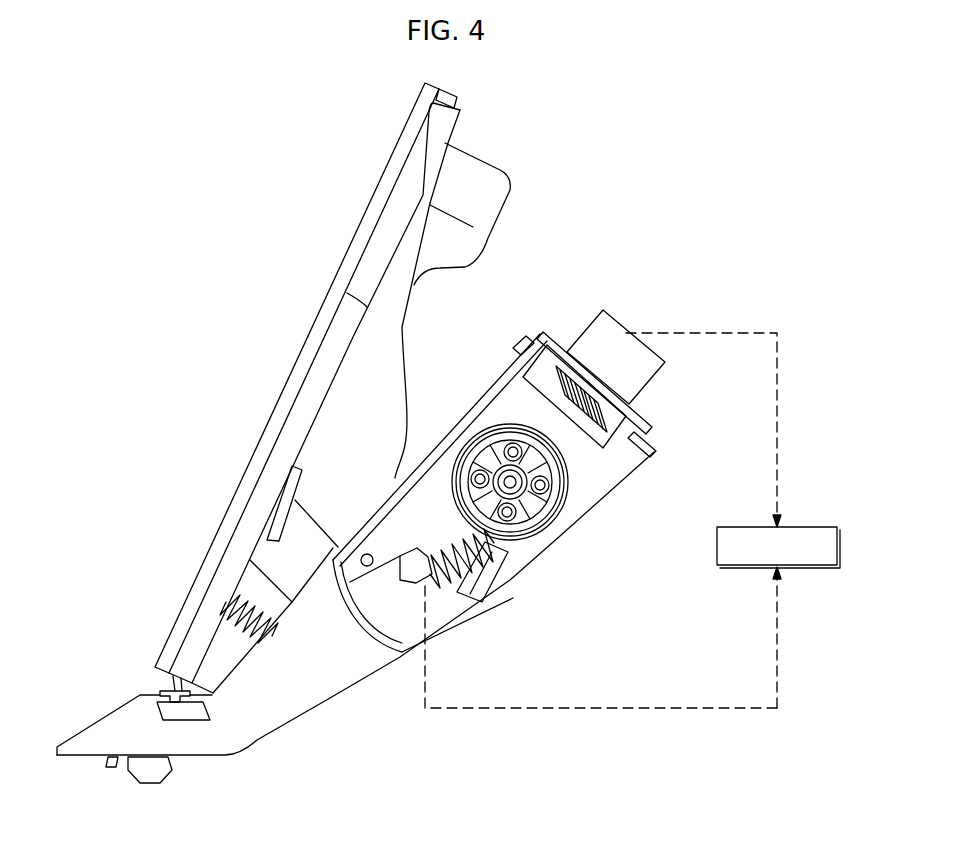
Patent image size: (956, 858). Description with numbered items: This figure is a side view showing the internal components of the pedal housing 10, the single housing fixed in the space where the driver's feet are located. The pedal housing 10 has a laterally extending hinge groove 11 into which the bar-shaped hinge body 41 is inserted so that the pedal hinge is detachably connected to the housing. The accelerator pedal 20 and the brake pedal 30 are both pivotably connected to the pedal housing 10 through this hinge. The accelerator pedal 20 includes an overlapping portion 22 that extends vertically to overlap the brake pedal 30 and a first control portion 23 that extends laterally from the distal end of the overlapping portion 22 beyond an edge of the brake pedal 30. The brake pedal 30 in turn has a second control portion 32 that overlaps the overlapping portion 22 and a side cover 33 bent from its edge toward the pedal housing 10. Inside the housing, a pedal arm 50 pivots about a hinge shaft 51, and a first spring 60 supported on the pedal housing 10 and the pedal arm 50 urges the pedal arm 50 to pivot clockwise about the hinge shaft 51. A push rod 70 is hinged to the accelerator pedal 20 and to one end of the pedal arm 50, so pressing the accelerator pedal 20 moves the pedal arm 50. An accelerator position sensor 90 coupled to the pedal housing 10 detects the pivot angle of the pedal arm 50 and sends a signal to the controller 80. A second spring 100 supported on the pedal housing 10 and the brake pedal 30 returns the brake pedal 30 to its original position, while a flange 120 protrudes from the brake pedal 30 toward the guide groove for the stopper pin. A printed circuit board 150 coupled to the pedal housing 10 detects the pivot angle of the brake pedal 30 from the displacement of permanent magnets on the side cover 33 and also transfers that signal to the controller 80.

The pedal housing 10 is at (252, 720).
The hinge groove 11 is at (157, 717).
The accelerator pedal 20 is at (494, 150).
The overlapping portion 22 is at (282, 460).
The first control portion 23 is at (402, 197).
The brake pedal 30 is at (327, 262).
The second control portion 32 is at (277, 395).
The side cover 33 is at (388, 320).
The hinge body 41 is at (187, 710).
The pedal arm 50 is at (373, 570).
The hinge shaft 51 is at (512, 483).
The first spring 60 is at (490, 590).
The push rod 70 is at (305, 520).
The controller 80 is at (811, 526).
The accelerator position sensor 90 is at (621, 335).
The second spring 100 is at (245, 622).
The flange 120 is at (252, 583).
The printed circuit board 150 is at (397, 588).